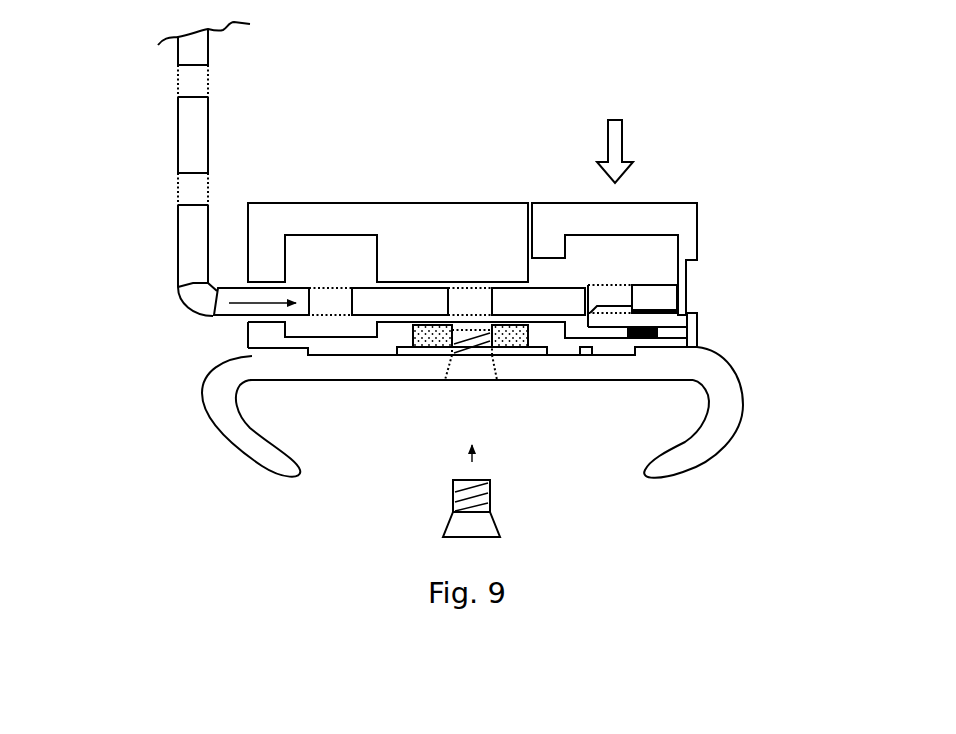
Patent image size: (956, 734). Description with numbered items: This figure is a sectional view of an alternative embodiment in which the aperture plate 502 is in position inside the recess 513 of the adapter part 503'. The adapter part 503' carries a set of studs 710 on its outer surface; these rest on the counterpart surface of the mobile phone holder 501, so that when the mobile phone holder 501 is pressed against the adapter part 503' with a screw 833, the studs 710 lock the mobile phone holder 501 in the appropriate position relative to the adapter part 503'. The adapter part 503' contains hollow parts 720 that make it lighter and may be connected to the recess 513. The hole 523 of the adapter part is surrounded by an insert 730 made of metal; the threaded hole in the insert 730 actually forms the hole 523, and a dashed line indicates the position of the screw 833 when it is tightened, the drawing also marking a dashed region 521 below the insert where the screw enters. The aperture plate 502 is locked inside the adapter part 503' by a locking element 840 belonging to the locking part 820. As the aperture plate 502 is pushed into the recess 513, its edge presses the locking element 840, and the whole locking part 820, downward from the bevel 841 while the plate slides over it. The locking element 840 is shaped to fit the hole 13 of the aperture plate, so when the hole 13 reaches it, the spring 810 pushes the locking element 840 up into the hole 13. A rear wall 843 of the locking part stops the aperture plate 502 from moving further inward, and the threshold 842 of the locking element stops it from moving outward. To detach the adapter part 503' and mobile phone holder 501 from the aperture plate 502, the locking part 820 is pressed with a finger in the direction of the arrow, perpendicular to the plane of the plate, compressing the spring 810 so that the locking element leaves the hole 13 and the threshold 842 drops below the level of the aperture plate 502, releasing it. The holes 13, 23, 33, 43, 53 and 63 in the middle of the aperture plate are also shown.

The hole of the aperture plate 13 is at (614, 282).
The hole of the aperture plate 23 is at (467, 302).
The hole of the aperture plate 33 is at (321, 308).
The hole of the aperture plate 43 is at (194, 304).
The hole of the aperture plate 53 is at (186, 192).
The hole of the aperture plate 63 is at (200, 80).
The mobile phone holder 501 is at (747, 417).
The aperture plate 502 is at (175, 247).
The adapter part 503' is at (468, 204).
The recess of the adapter part 513 is at (229, 303).
The plug-in opening 521 is at (477, 374).
The hole of the adapter part 523 is at (478, 345).
The studs 710 is at (379, 359).
The hollow parts 720 is at (333, 252).
The insert 730 is at (424, 331).
The spring 810 is at (694, 350).
The locking part 820 is at (697, 207).
The locking element 840 is at (622, 302).
The bevel 841 is at (592, 311).
The threshold of the locking element 842 is at (661, 334).
The rear wall of the locking part 843 is at (675, 246).
The screw 833 is at (452, 498).